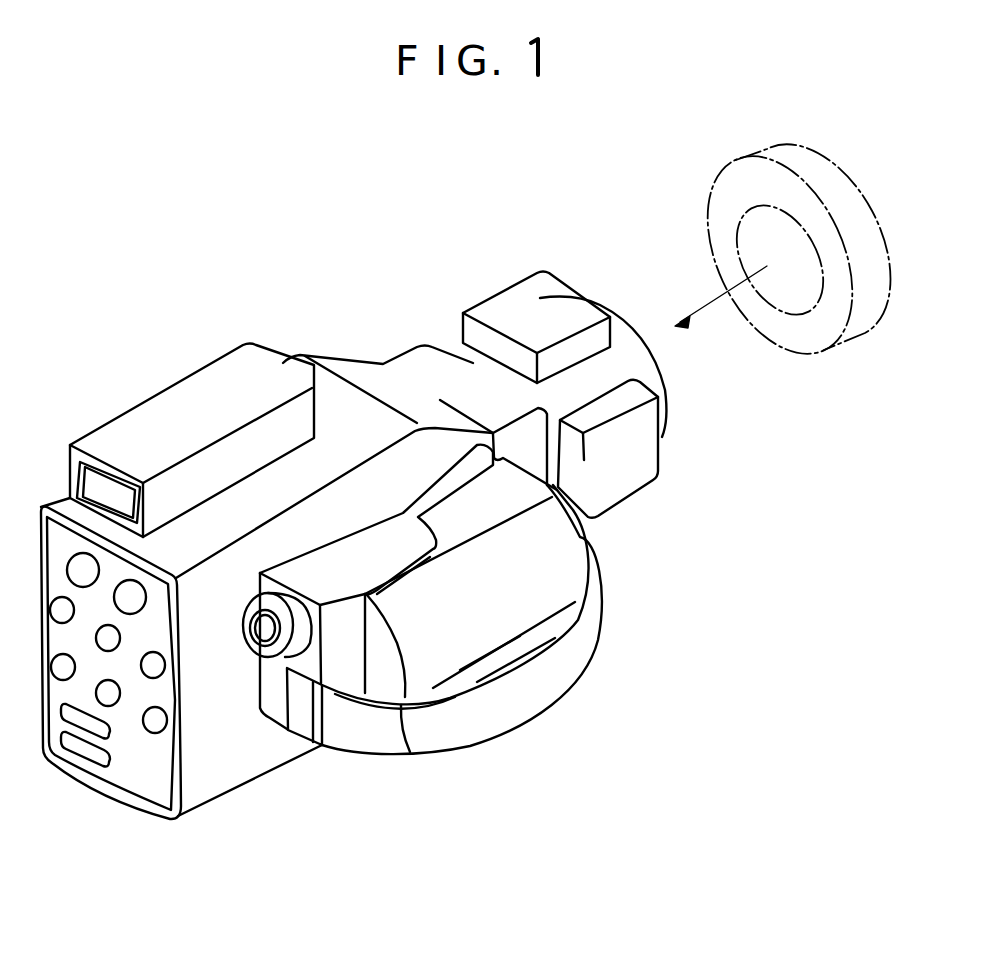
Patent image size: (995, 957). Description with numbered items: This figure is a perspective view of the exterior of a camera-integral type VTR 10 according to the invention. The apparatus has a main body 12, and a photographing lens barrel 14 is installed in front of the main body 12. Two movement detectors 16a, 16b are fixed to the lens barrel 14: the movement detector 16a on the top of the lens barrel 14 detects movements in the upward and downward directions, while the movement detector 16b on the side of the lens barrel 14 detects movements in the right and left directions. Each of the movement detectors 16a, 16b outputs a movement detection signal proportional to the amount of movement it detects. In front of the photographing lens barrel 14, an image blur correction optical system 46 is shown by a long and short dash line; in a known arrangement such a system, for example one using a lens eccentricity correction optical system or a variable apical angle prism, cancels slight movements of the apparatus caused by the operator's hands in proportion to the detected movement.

The camera-integral type VTR 10 is at (578, 705).
The main body 12 is at (353, 372).
The photographing lens barrel 14 is at (635, 337).
The movement detector 16a is at (503, 298).
The movement detector 16b is at (652, 470).
The image blur correction optical system 46 is at (824, 338).